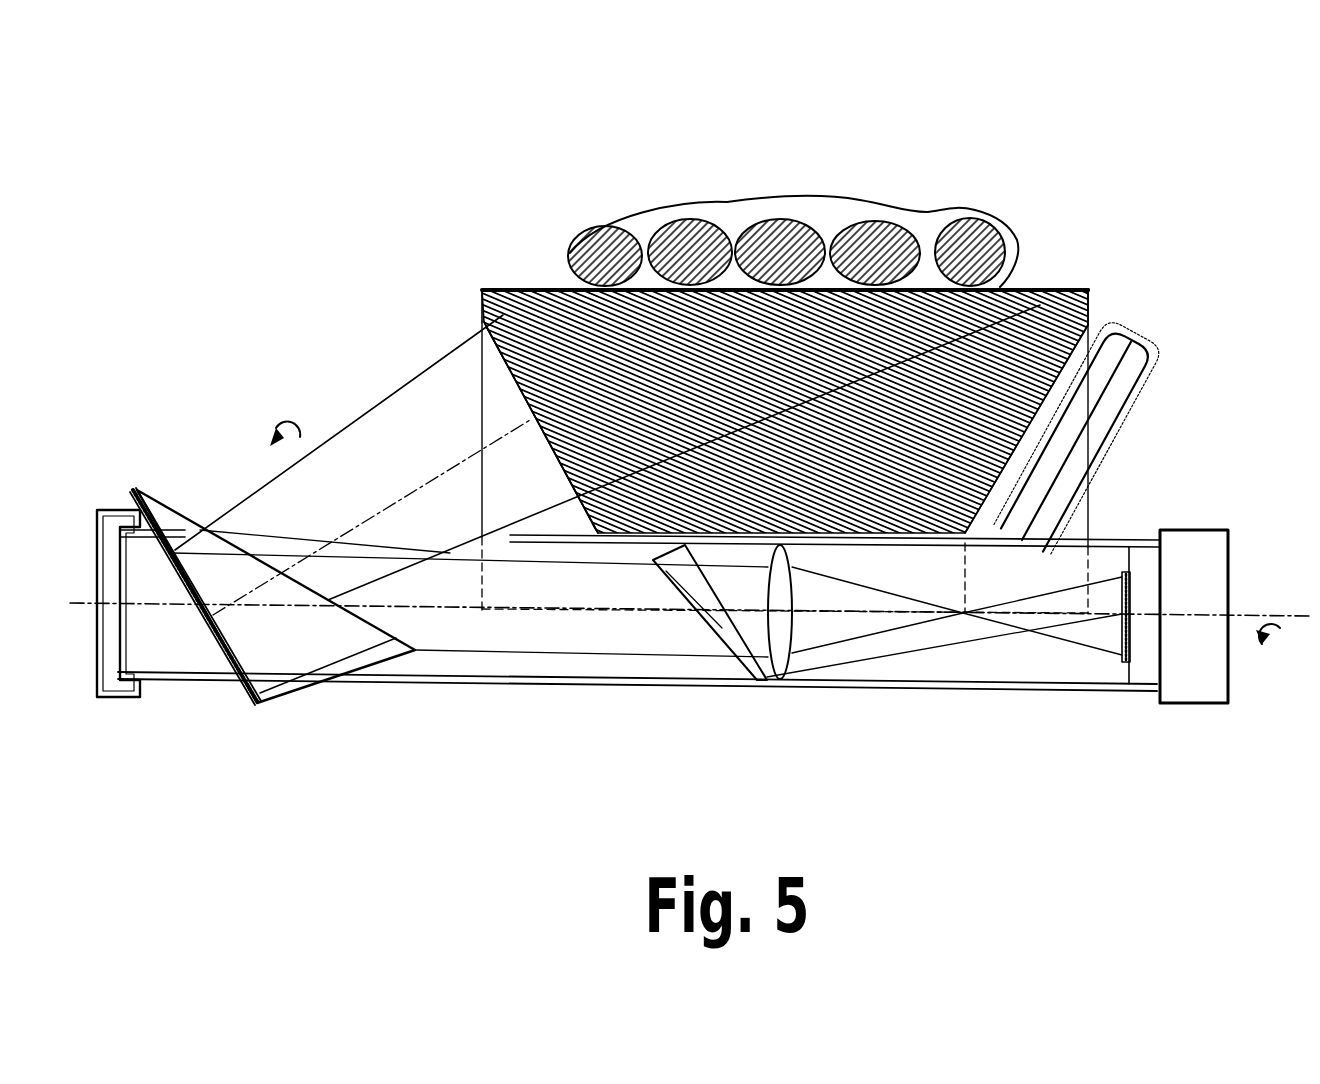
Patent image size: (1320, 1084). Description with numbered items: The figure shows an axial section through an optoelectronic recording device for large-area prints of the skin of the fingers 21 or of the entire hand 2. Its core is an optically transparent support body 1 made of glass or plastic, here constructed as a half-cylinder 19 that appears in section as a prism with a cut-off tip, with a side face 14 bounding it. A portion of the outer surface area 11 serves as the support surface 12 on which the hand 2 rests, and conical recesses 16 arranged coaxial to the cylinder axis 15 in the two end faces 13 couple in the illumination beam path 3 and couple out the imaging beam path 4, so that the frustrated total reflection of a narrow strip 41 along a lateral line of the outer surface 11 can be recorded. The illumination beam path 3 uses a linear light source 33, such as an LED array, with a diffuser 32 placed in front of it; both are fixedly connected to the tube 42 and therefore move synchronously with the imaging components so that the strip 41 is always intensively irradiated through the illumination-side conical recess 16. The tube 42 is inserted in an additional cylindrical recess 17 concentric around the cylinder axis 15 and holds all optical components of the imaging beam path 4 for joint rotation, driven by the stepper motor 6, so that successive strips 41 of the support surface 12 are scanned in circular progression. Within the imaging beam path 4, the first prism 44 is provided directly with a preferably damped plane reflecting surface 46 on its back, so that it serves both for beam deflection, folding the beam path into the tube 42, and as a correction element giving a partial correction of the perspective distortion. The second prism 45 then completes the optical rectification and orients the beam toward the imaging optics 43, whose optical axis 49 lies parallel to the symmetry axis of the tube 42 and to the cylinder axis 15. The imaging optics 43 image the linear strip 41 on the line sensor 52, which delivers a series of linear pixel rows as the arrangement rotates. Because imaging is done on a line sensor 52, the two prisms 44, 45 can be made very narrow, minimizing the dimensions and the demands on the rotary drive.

The support body 1 is at (507, 307).
The hand 2 is at (720, 210).
The illumination beam path 3 is at (1103, 332).
The imaging beam path 4 is at (388, 398).
The stepper motor 6 is at (1207, 672).
The outer surface area 11 is at (500, 274).
The support surface 12 is at (1026, 281).
The end faces 13 is at (1092, 313).
The prism left edge face 14 is at (480, 303).
The cylinder axis 15 is at (1240, 615).
The conical recesses 16 is at (512, 398).
The cylindrical recess 17 is at (937, 540).
The half-cylinder 19 is at (516, 392).
The fingers 21 is at (805, 235).
The diffuser 32 is at (1130, 340).
The linear light source 33 is at (1125, 380).
The strip 41 is at (805, 292).
The tube 42 is at (382, 680).
The imaging optics 43 is at (773, 680).
The first prism 44 is at (178, 548).
The second prism 45 is at (720, 630).
The reflecting surface 46 is at (222, 647).
The optical axis 49 is at (963, 613).
The line sensor 52 is at (1123, 663).